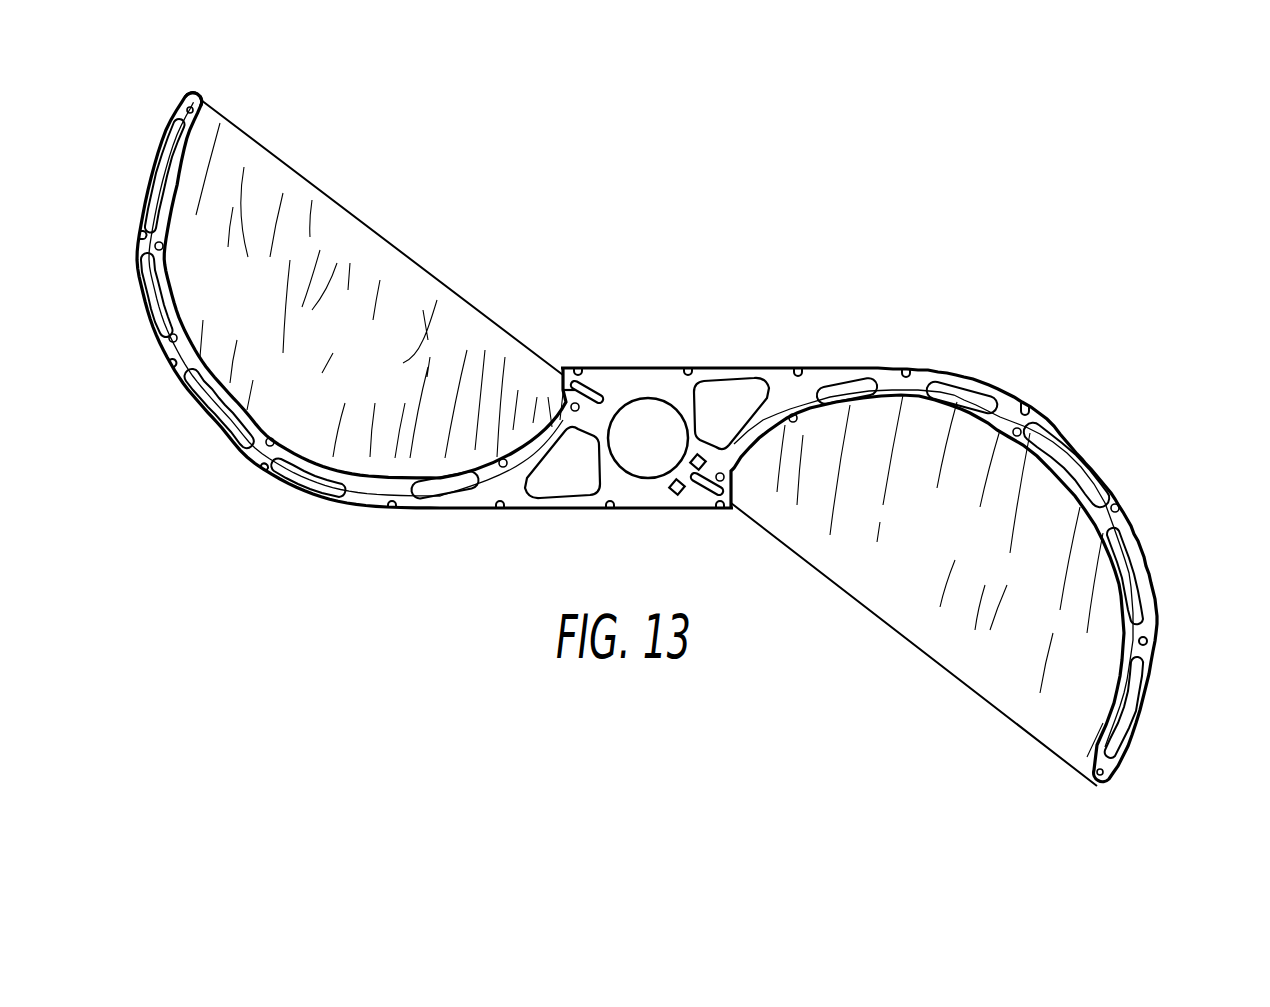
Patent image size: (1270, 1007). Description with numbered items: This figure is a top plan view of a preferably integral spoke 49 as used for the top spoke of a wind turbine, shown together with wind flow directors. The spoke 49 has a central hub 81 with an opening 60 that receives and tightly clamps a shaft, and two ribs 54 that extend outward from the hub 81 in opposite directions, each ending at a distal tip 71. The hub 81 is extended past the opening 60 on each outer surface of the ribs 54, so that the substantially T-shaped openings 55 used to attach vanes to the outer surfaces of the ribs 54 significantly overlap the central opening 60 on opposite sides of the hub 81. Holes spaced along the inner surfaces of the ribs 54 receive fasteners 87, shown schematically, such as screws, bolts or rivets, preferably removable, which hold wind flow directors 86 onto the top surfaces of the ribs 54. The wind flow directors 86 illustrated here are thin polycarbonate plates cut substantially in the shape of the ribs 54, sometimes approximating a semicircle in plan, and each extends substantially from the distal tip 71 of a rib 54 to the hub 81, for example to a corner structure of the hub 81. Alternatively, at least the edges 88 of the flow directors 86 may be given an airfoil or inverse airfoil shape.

The spoke 49 is at (804, 227).
The ribs 54 is at (250, 466).
The substantially T-shaped openings 55 is at (398, 523).
The opening 60 is at (650, 410).
The distal tip 71 is at (203, 93).
The hub 81 is at (617, 385).
The wind flow directors 86 is at (381, 264).
The fasteners 87 is at (163, 247).
The edges 88 is at (452, 284).